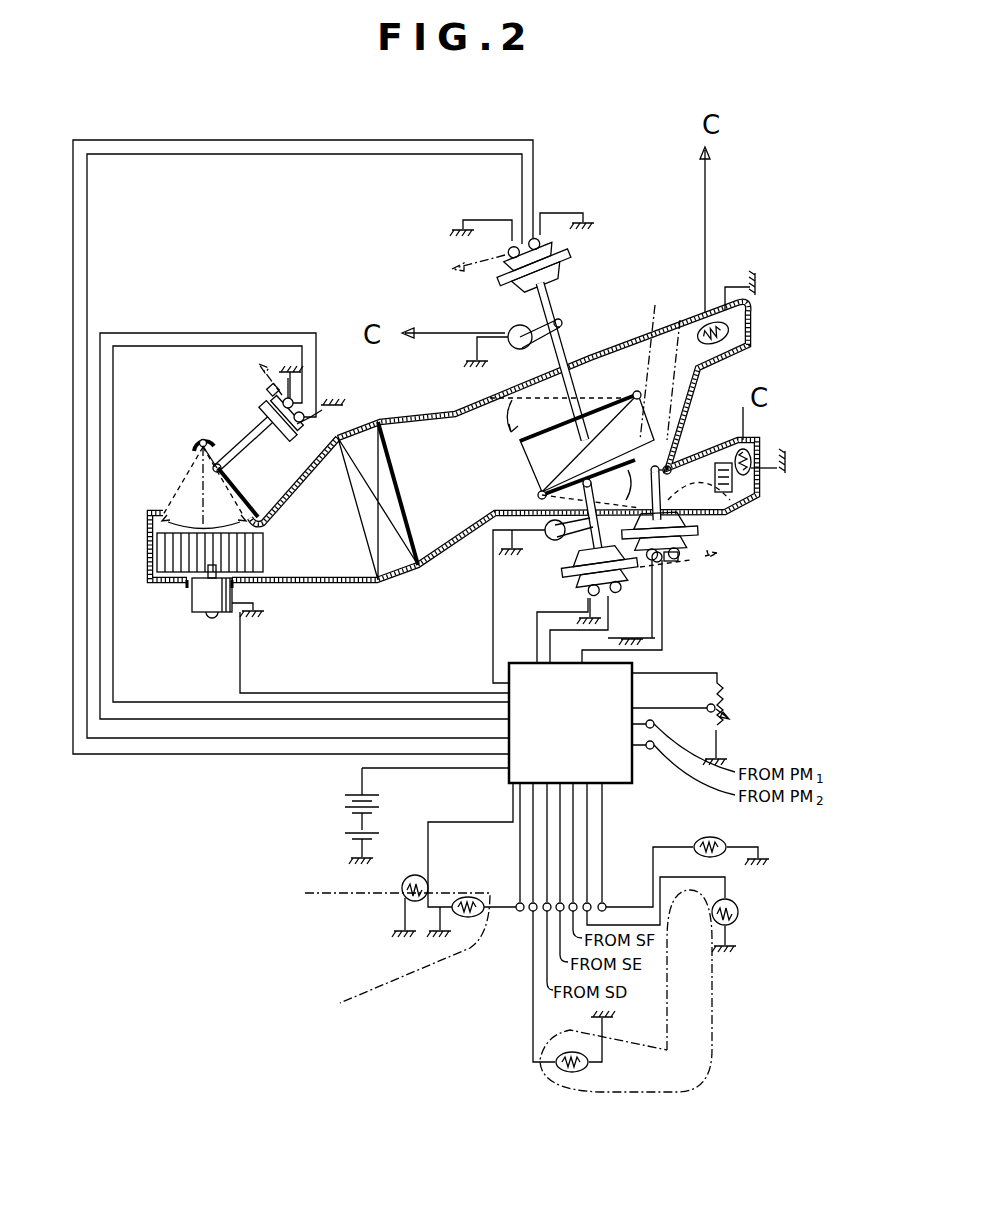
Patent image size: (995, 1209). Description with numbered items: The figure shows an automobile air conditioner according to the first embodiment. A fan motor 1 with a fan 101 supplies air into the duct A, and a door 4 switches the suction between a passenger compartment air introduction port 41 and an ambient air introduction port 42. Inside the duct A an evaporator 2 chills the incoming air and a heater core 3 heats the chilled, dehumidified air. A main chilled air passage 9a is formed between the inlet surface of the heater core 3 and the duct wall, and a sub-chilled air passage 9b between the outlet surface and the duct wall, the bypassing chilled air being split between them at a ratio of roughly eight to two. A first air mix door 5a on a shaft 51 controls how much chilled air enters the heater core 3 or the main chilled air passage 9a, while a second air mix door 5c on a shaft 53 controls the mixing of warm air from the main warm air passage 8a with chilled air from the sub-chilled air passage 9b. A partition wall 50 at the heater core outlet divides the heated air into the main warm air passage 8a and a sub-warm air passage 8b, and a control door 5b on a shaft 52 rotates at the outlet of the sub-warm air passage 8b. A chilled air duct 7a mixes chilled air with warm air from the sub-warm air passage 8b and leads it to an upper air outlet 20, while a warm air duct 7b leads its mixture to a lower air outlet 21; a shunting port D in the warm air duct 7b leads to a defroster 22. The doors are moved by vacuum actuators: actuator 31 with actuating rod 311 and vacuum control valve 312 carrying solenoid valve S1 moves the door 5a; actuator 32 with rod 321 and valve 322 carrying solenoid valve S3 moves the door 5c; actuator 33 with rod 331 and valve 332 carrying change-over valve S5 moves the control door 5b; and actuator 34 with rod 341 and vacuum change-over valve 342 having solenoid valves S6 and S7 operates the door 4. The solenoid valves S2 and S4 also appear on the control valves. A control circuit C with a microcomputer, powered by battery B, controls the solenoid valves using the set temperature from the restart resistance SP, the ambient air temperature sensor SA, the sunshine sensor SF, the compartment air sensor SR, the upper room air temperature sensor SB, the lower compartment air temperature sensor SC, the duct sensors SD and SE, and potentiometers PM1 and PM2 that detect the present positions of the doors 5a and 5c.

The fan motor 1 is at (200, 613).
The evaporator 2 is at (392, 490).
The heater core 3 is at (535, 480).
The door 4 is at (236, 497).
The first air mix door 5a is at (535, 439).
The control door 5b is at (684, 452).
The second air mix door 5c is at (585, 480).
The chilled air duct 7a is at (650, 341).
The warm air duct 7b is at (586, 521).
The main warm air passage 8a is at (610, 434).
The sub-warm air passage 8b is at (680, 432).
The main chilled air passage 9a is at (604, 348).
The sub-chilled air passage 9b is at (538, 496).
The upper air outlet 20 is at (748, 324).
The lower air outlet 21 is at (752, 498).
The defroster 22 is at (650, 303).
The actuator 31 is at (560, 270).
The actuating rod 311 is at (556, 296).
The vacuum control valve 312 is at (548, 230).
The actuator 32 is at (562, 575).
The actuating rod 321 is at (580, 542).
The vacuum control valve 322 is at (657, 641).
The actuator 33 is at (672, 548).
The rod 331 is at (680, 530).
The vacuum control valve 332 is at (722, 578).
The actuator 34 is at (292, 441).
The rod 341 is at (250, 434).
The vacuum change-over valve 342 is at (305, 397).
The passenger compartment air introduction port 41 is at (185, 480).
The ambient air introduction port 42 is at (246, 514).
The partition wall 50 is at (594, 439).
The shaft 51 is at (634, 394).
The shaft 52 is at (730, 514).
The shaft 53 is at (515, 492).
The fan 101 is at (265, 557).
The duct A is at (443, 413).
The battery B is at (360, 822).
The control circuit C is at (570, 723).
The shunting port D is at (760, 512).
The solenoid valve S1 is at (492, 250).
The switch S2 is at (542, 232).
The solenoid valve S3 is at (615, 598).
The switch S4 is at (582, 603).
The solenoid-operated change-over valve S5 is at (675, 567).
The solenoid valve S6 is at (270, 389).
The solenoid valve S7 is at (340, 410).
The potentiometer PM1 is at (512, 326).
The potentiometer PM2 is at (505, 582).
The ambient air temperature sensor SA is at (705, 837).
The upper room air temperature sensor SB is at (470, 896).
The lower compartment air temperature sensor SC is at (572, 1074).
The sensor SD is at (732, 341).
The sensor SE is at (752, 449).
The sunshine sensor SF is at (395, 894).
The restart resistance SP is at (730, 730).
The compartment air sensor SR is at (738, 913).